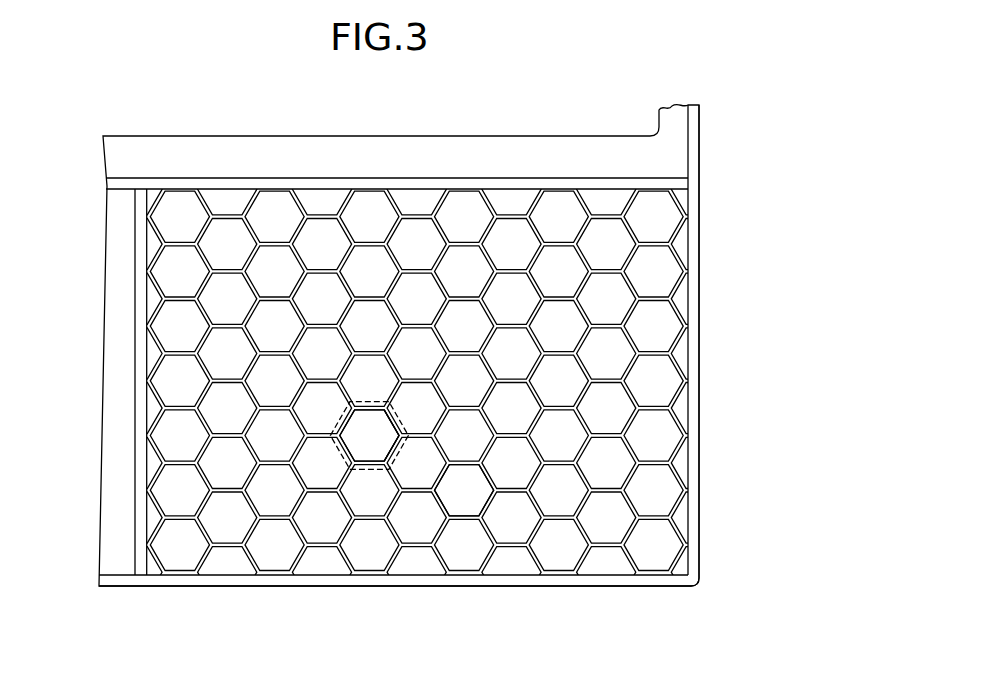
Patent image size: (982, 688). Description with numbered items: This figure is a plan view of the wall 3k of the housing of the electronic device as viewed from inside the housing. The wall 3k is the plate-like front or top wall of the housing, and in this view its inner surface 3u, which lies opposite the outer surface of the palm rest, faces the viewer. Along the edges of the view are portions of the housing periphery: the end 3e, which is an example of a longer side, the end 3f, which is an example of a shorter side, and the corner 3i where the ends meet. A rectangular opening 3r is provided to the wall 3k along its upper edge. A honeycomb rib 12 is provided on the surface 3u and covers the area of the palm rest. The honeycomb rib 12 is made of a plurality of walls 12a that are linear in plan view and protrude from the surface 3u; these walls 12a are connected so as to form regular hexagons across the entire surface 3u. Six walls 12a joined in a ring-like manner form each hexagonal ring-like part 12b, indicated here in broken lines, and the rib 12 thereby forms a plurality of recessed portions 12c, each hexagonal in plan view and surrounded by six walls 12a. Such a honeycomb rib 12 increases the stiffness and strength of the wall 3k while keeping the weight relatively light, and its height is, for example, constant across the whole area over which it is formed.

The wall 3k is at (531, 109).
The rectangular opening 3r is at (143, 137).
The end 3f is at (700, 155).
The corner 3i is at (694, 587).
The end 3e is at (143, 586).
The honeycomb rib 12 is at (387, 227).
The surface 3u is at (465, 492).
The recessed portion 12c is at (372, 436).
The hexagonal ring-like part 12b is at (369, 470).
The wall 12a is at (397, 424).